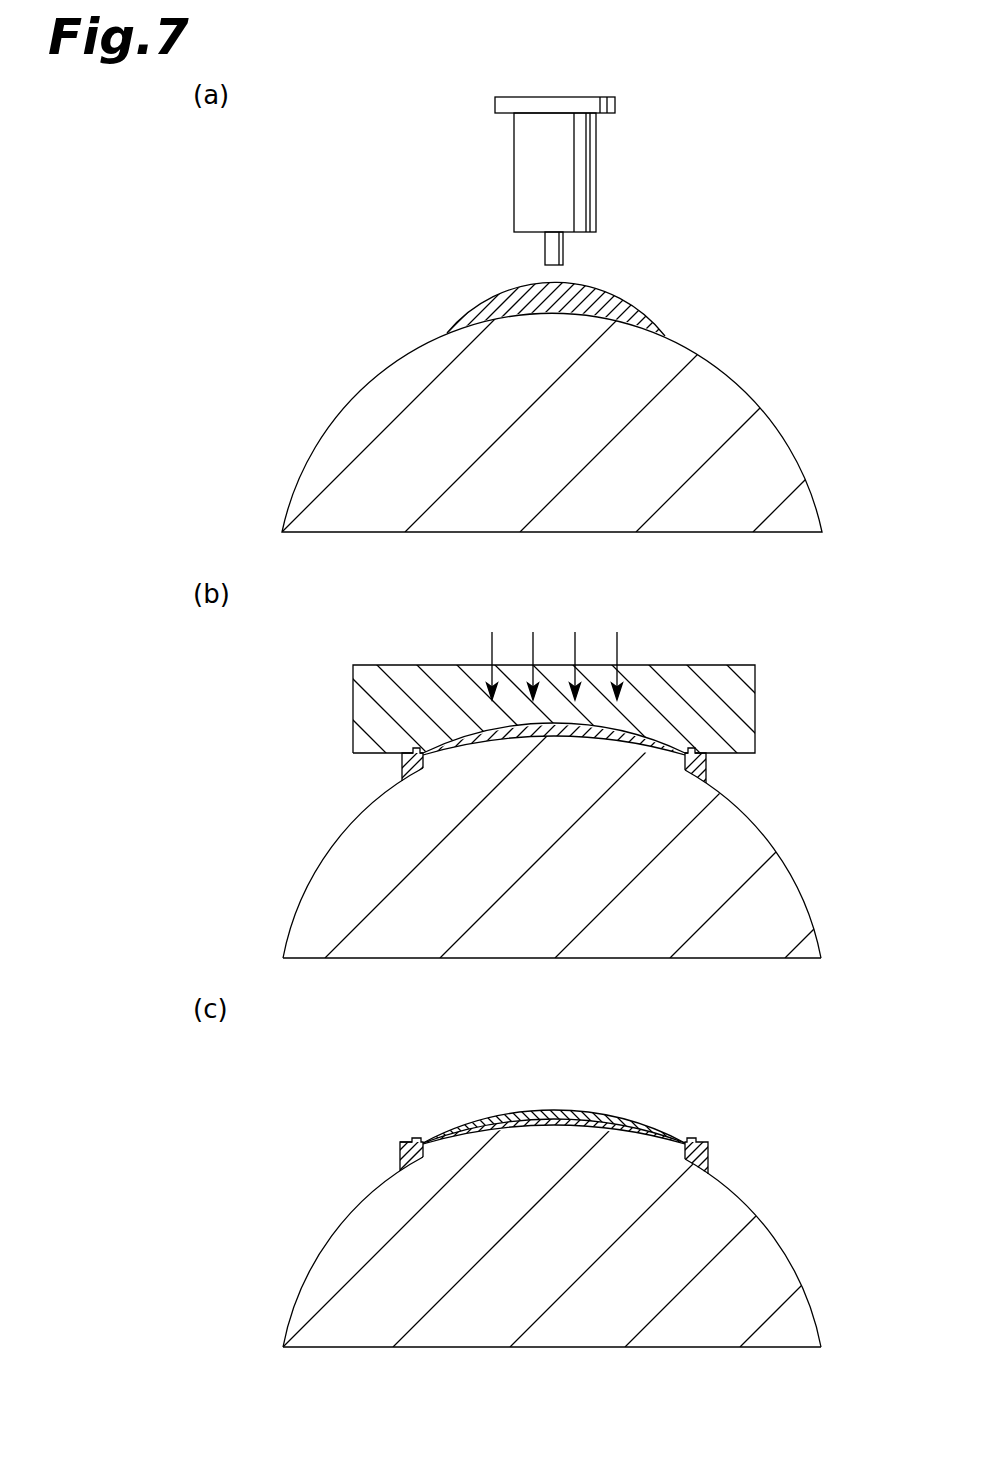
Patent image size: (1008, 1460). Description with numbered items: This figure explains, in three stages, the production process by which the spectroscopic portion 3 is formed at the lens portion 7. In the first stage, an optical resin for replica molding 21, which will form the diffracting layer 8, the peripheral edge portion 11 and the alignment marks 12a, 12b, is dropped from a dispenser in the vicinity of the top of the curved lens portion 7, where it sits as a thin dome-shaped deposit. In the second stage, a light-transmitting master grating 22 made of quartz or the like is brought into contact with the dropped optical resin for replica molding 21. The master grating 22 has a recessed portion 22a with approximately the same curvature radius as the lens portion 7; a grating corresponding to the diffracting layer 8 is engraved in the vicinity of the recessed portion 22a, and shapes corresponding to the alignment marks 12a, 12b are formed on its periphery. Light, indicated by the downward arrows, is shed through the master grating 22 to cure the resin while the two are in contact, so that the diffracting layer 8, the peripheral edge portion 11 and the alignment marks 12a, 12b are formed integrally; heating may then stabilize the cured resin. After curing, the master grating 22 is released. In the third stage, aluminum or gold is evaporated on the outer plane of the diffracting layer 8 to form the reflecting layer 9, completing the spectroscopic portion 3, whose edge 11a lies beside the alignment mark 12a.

The lens portion 7 is at (777, 460).
The optical resin for replica molding 21 is at (615, 307).
The master grating 22 is at (547, 720).
The recessed portion 22a is at (548, 722).
The spectroscopic portion 3 is at (580, 1087).
The diffracting layer 8 is at (630, 1127).
The reflecting layer 9 is at (597, 1108).
The peripheral edge portion 11 is at (605, 1038).
The end portion 11a is at (415, 1138).
The alignment mark 12a is at (400, 1122).
The alignment mark 12b is at (691, 1138).